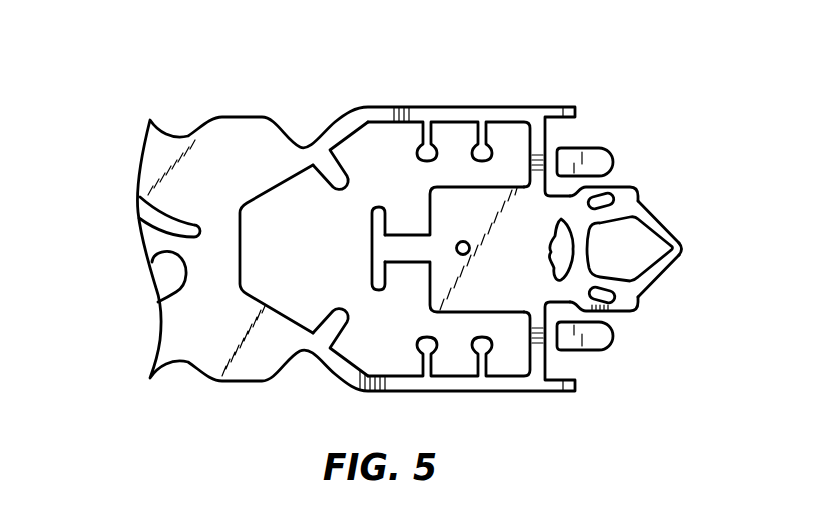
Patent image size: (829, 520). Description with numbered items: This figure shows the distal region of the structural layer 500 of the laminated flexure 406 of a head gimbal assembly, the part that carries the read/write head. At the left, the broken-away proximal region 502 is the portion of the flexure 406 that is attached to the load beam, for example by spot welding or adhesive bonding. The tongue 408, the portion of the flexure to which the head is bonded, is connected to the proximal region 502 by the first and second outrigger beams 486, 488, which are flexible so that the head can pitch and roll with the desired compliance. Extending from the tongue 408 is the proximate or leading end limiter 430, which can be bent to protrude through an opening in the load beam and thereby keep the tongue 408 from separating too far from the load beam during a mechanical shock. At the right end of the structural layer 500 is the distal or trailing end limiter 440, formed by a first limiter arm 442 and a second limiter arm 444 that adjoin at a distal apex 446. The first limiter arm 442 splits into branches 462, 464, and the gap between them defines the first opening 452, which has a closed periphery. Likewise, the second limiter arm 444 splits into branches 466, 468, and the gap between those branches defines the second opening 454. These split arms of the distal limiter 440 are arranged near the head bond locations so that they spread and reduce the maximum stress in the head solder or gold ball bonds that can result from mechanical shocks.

The structural layer 500 is at (160, 148).
The proximal region 502 is at (178, 343).
The flexure 406 is at (225, 137).
The proximate limiter 430 is at (377, 205).
The first outrigger beam 486 is at (372, 118).
The tongue 408 is at (447, 213).
The second outrigger beam 488 is at (430, 384).
The branch 462 is at (597, 195).
The first opening 452 is at (612, 213).
The branch 464 is at (646, 217).
The first limiter arm 442 is at (677, 227).
The distal limiter 440 is at (676, 239).
The distal apex 446 is at (690, 252).
The second limiter arm 444 is at (667, 270).
The branch 466 is at (650, 285).
The second opening 454 is at (614, 301).
The branch 468 is at (596, 318).